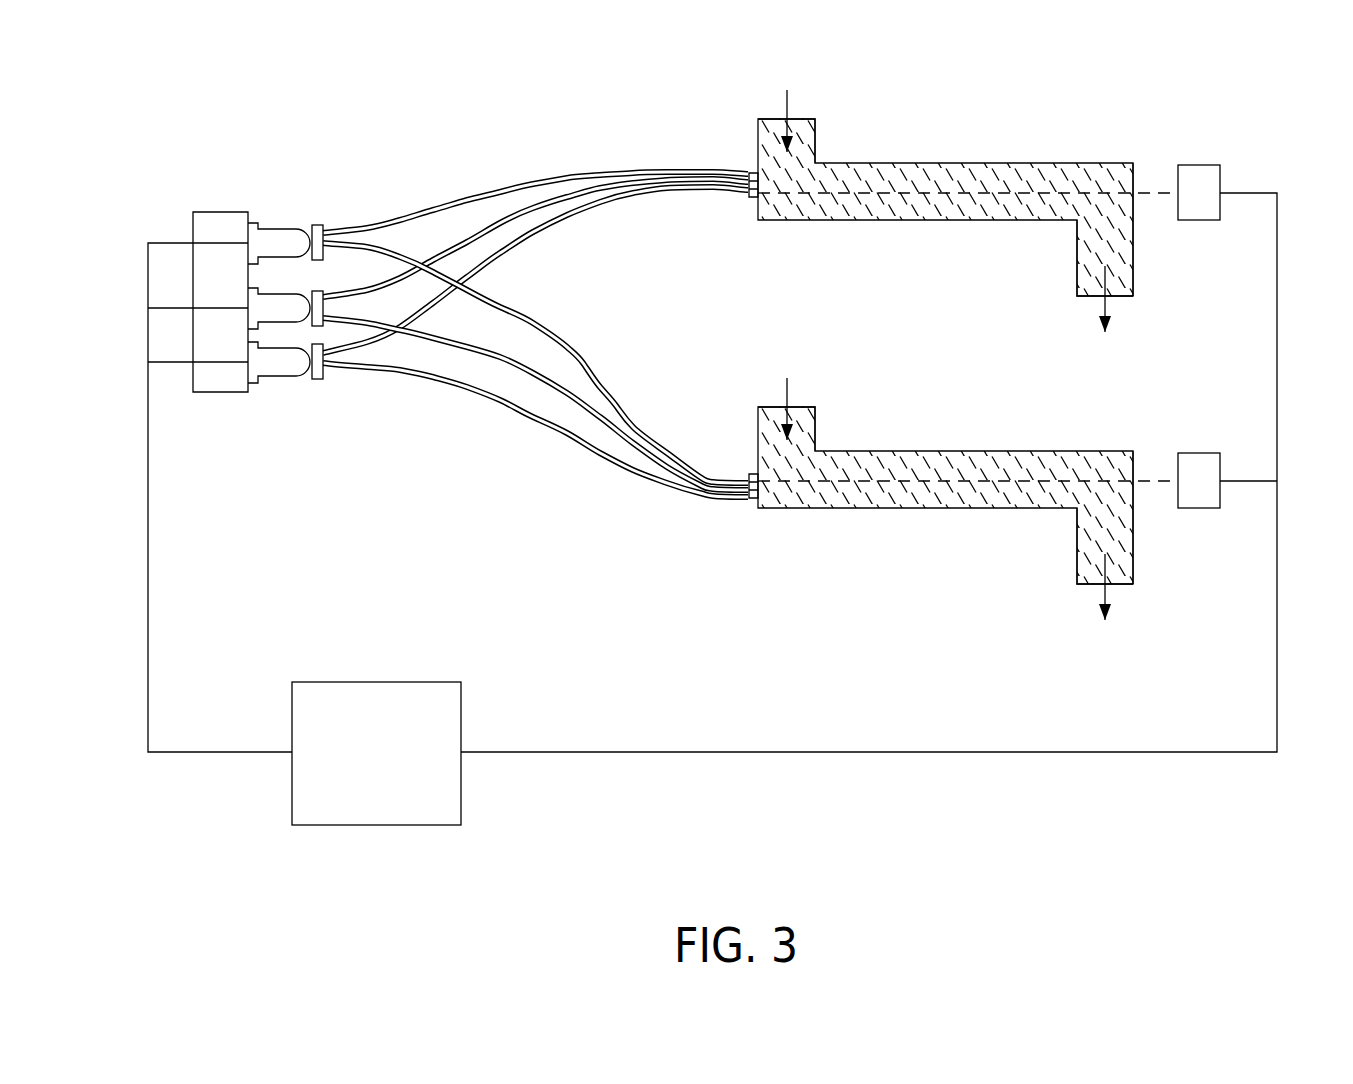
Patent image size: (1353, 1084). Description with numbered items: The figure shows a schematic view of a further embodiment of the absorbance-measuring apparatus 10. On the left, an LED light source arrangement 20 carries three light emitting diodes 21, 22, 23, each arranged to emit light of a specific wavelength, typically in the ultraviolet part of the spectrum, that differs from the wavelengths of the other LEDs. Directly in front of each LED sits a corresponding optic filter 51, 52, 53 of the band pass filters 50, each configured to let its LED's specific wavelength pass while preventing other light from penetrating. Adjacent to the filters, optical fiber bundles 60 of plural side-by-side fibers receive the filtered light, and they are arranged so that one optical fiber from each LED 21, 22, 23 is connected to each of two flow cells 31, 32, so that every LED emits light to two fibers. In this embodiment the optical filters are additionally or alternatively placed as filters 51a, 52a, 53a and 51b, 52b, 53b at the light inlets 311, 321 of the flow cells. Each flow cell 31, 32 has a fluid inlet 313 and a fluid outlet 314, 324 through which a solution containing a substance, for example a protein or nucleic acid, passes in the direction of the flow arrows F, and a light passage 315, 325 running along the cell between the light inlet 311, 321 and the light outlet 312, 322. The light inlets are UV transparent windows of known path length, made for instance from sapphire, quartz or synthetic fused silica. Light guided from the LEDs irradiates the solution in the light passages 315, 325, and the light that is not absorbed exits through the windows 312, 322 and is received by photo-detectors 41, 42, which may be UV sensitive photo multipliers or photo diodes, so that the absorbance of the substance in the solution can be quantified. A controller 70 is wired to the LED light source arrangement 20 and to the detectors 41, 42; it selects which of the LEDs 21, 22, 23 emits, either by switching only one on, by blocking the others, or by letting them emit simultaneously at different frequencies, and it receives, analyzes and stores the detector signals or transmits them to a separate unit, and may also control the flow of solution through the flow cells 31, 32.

The apparatus 10 is at (1105, 798).
The LED light source arrangement 20 is at (204, 196).
The light emitting diode 21 is at (270, 242).
The light emitting diode 22 is at (277, 302).
The light emitting diode 23 is at (272, 370).
The band pass filters 50 is at (359, 298).
The optic filter 51 is at (320, 232).
The optic filter 52 is at (328, 320).
The optic filter 53 is at (318, 379).
The optical fiber bundles 60 is at (537, 334).
The filter 51a is at (748, 180).
The filter 52a is at (748, 188).
The filter 53a is at (748, 196).
The filter 51b is at (748, 485).
The filter 52b is at (748, 490).
The filter 53b is at (748, 497).
The flow cell 31 is at (963, 208).
The light inlet 311 is at (756, 172).
The light outlet 312 is at (1137, 165).
The inlet 313 is at (812, 119).
The outlet 314 is at (1132, 297).
The light passage 315 is at (873, 195).
The flow cell 32 is at (963, 496).
The light inlet 321 is at (756, 459).
The light outlet 322 is at (1137, 453).
The outlet 324 is at (1132, 585).
The light passage 325 is at (873, 483).
The photo-detector 41 is at (1201, 177).
The photo-detector 42 is at (1201, 465).
The controller 70 is at (368, 808).